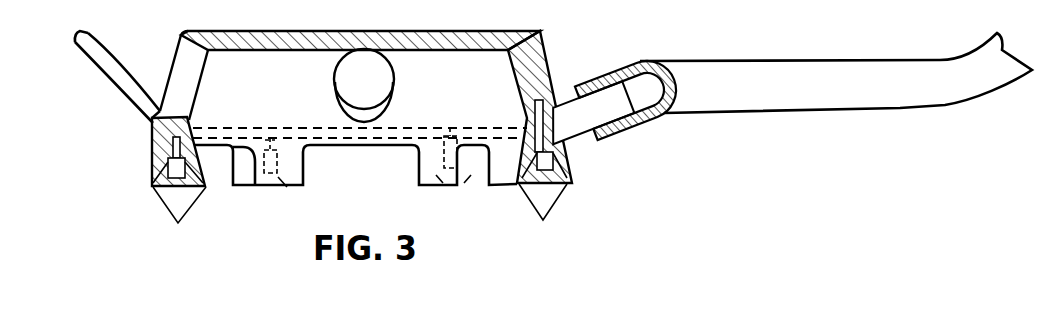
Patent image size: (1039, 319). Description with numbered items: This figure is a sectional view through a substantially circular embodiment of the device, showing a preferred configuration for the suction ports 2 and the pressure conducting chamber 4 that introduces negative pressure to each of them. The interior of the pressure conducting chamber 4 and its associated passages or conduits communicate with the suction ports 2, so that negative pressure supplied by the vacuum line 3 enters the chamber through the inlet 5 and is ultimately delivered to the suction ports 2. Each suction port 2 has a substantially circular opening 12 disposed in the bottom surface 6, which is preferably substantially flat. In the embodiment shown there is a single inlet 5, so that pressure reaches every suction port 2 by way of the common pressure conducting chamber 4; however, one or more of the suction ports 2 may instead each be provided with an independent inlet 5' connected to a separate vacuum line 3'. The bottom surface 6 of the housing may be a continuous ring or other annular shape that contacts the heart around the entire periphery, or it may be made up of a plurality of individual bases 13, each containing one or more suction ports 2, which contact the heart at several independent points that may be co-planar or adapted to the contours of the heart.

The suction port 2 is at (152, 186).
The vacuum line 3 is at (836, 92).
The separate vacuum line 3' is at (117, 77).
The pressure conducting chamber 4 is at (300, 127).
The inlet 5 is at (611, 112).
The independent inlet 5' is at (131, 110).
The bottom surface 6 is at (241, 188).
The substantially circular opening 12 is at (360, 218).
The individual base 13 is at (152, 166).